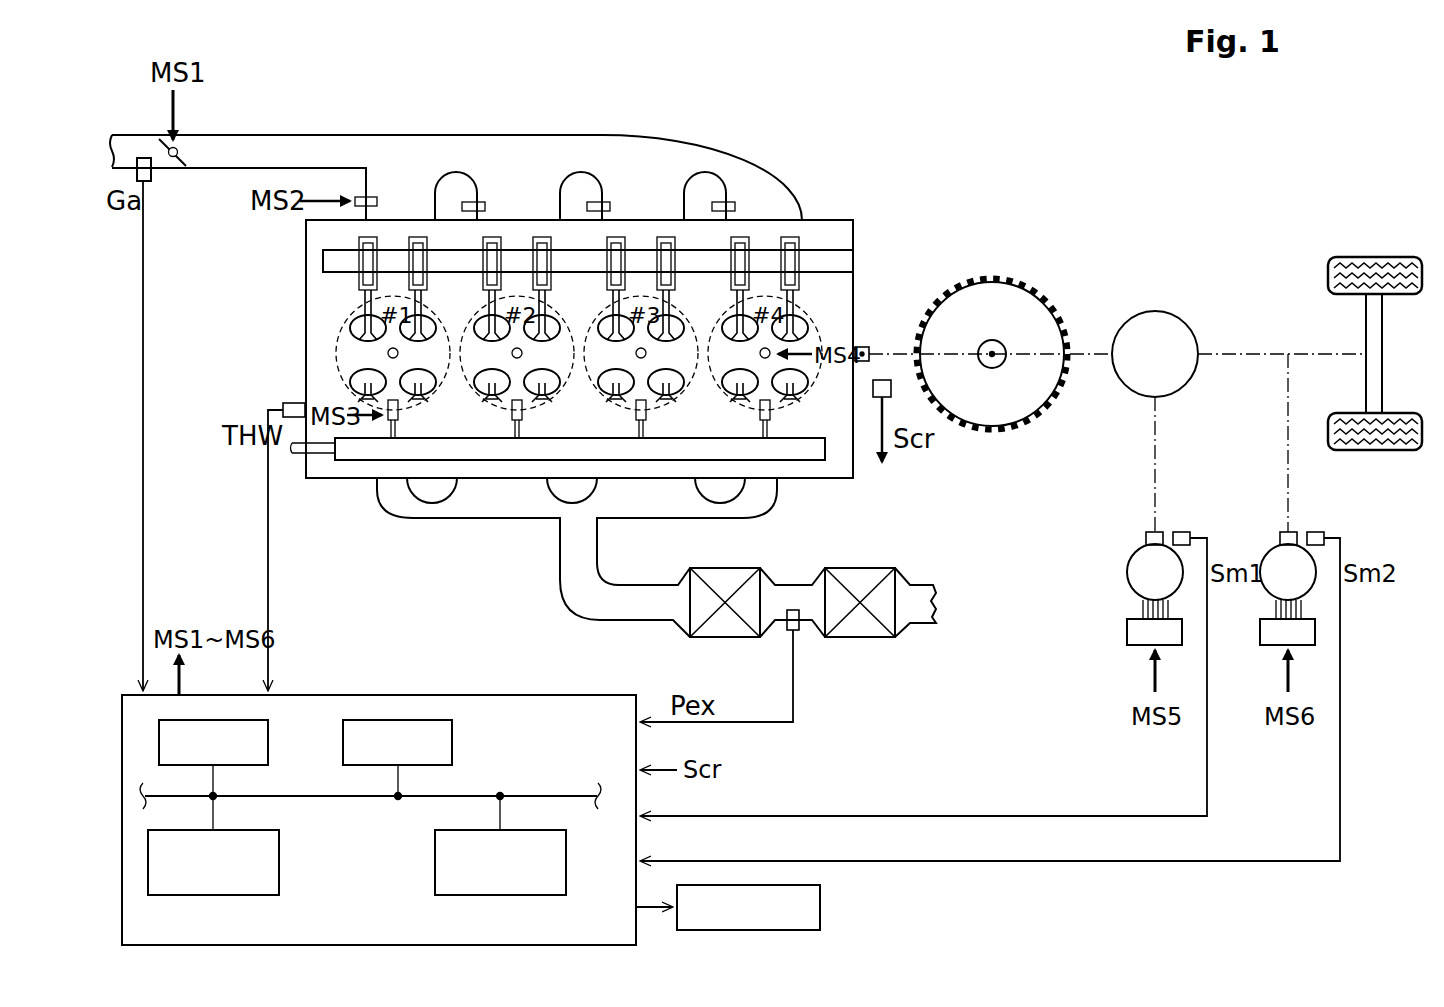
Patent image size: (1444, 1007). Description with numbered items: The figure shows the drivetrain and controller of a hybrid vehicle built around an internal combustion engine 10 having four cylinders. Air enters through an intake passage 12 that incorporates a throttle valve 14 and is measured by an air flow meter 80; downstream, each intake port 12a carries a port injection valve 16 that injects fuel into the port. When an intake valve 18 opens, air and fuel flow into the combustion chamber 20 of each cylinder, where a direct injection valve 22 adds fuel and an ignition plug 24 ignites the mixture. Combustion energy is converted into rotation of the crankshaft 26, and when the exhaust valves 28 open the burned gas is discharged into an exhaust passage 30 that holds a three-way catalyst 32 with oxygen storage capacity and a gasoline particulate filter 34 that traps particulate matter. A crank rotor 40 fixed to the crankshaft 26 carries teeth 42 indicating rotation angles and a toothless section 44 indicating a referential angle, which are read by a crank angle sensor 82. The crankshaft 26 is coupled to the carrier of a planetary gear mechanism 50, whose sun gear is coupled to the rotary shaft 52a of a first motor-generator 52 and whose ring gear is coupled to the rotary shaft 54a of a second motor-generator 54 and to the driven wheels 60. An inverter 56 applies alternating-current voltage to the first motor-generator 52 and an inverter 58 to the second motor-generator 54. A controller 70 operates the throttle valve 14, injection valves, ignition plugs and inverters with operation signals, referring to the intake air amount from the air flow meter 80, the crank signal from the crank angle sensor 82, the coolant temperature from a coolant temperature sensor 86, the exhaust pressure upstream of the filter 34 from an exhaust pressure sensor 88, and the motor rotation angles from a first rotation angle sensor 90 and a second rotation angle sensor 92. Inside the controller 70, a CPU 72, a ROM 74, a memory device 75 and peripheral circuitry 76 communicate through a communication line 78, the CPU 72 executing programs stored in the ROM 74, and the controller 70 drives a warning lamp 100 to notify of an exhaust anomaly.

The internal combustion engine 10 is at (858, 195).
The intake passage 12 is at (140, 140).
The intake port 12a is at (787, 185).
The throttle valve 14 is at (187, 148).
The port injection valve 16 is at (712, 205).
The intake valve 18 is at (358, 290).
The combustion chamber 20 is at (336, 348).
The direct injection valve 22 is at (396, 414).
The ignition plug 24 is at (398, 353).
The crankshaft 26 is at (862, 347).
The exhaust valve 28 is at (417, 391).
The exhaust passage 30 is at (650, 507).
The three-way catalyst 32 is at (723, 565).
The gasoline particulate filter 34 is at (861, 565).
The crank rotor 40 is at (1017, 321).
The teeth 42 is at (1042, 303).
The toothless section 44 is at (1055, 326).
The planetary gear mechanism 50 is at (1194, 320).
The first motor-generator 52 is at (1128, 572).
The rotary shaft of first motor-generator 52a is at (1146, 540).
The second motor-generator 54 is at (1260, 559).
The rotary shaft of second motor-generator 54a is at (1284, 532).
The inverter 56 is at (1122, 633).
The inverter 58 is at (1255, 633).
The driven wheels 60 is at (1418, 452).
The controller 70 is at (379, 793).
The central processing unit 72 is at (270, 745).
The read-only memory 74 is at (454, 745).
The memory device 75 is at (568, 866).
The peripheral circuitry 76 is at (281, 866).
The communication line 78 is at (554, 794).
The air flow meter 80 is at (150, 176).
The crank angle sensor 82 is at (891, 390).
The coolant temperature sensor 86 is at (282, 403).
The exhaust pressure sensor 88 is at (800, 625).
The first rotation angle sensor 90 is at (1182, 530).
The second rotation angle sensor 92 is at (1314, 530).
The warning lamp 100 is at (821, 906).